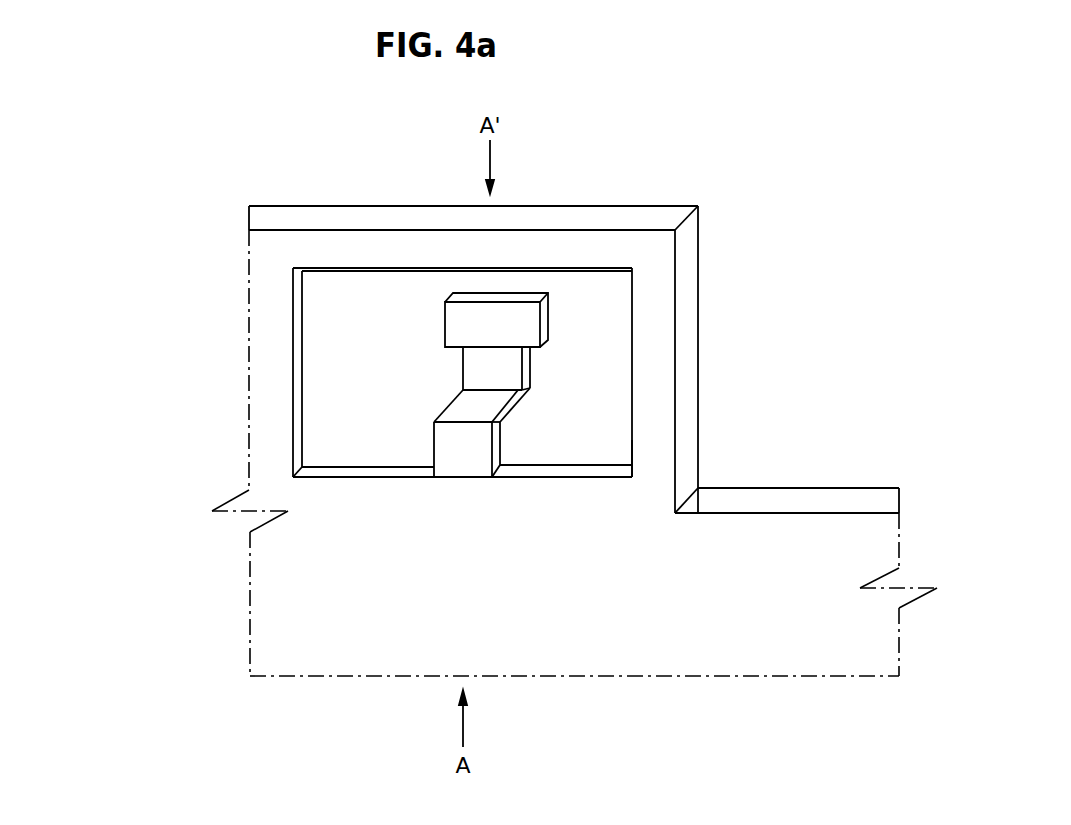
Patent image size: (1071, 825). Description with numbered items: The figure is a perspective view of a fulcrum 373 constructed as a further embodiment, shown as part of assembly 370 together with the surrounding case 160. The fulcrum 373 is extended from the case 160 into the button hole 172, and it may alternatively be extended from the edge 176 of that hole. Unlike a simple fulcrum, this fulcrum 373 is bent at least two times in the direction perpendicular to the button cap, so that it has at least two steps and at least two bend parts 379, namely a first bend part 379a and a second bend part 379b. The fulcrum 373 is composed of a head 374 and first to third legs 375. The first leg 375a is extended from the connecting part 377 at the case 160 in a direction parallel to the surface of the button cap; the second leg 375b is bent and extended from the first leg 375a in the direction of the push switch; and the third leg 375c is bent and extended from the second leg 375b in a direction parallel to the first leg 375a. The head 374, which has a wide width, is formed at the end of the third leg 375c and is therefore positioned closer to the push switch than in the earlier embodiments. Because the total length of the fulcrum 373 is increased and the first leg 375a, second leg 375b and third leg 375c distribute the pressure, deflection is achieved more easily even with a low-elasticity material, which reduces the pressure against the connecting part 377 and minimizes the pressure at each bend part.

The lead frame / package body 370 is at (830, 146).
The case 160 is at (760, 657).
The button hole 172 is at (593, 287).
The edge 176 is at (633, 473).
The fulcrum 373 is at (286, 382).
The head 374 is at (465, 296).
The legs 375 is at (309, 399).
The first leg 375a is at (444, 449).
The second leg 375b is at (458, 407).
The third leg 375c is at (480, 363).
The bend parts 379 is at (686, 414).
The first bend part 379a is at (527, 389).
The second bend part 379b is at (503, 423).
The connecting part 377 is at (495, 473).